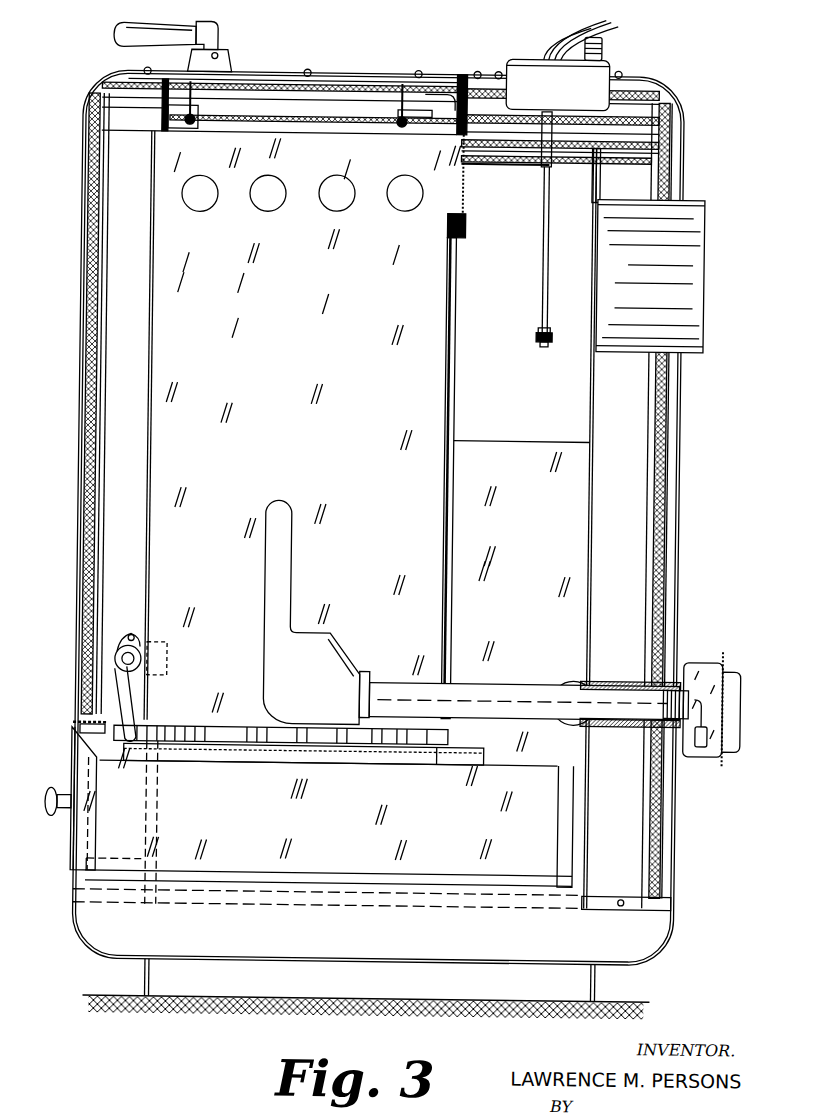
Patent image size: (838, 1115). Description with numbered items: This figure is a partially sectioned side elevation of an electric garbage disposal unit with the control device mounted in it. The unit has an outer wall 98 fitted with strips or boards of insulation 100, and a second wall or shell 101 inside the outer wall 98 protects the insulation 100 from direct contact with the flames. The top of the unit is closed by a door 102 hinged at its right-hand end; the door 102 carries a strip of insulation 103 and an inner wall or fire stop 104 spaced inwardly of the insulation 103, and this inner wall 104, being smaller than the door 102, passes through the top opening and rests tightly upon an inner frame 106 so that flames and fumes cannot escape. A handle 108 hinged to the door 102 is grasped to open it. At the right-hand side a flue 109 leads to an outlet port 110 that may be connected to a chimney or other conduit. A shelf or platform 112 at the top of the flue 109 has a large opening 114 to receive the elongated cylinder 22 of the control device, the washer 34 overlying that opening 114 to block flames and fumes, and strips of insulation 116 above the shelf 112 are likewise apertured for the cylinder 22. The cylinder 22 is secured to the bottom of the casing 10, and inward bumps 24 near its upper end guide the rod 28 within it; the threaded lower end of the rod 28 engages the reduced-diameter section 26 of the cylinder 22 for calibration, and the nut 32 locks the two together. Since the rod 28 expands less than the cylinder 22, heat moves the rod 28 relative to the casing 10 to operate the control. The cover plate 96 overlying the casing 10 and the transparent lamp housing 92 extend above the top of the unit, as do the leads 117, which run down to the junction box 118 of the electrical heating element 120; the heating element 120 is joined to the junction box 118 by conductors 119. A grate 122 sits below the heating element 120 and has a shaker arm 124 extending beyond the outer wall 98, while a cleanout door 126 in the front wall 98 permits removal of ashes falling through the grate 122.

The casing 10 is at (582, 91).
The elongated cylinder 22 is at (539, 261).
The bumps 24 is at (648, 140).
The reduced-diameter section 26 is at (538, 331).
The rod 28 is at (538, 344).
The nut 32 is at (535, 336).
The circular washer 34 is at (554, 160).
The lamp housing 92 is at (597, 44).
The cover plate 96 is at (604, 61).
The outer wall 98 is at (77, 507).
The strips of insulation 100 is at (90, 357).
The second wall 101 is at (145, 261).
The door 102 is at (334, 73).
The strip of insulation 103 is at (242, 86).
The inner wall 104 is at (223, 114).
The inner frame 106 is at (152, 128).
The handle 108 is at (107, 36).
The flue 109 is at (541, 413).
The outlet port 110 is at (685, 298).
The shelf 112 is at (496, 162).
The opening 114 is at (536, 161).
The strips of insulation 116 is at (648, 114).
The leads 117 is at (544, 37).
The junction box 118 is at (719, 678).
The conductors 119 is at (710, 713).
The electrical heating element 120 is at (269, 577).
The grate 122 is at (283, 750).
The shaker arm 124 is at (131, 700).
The cleanout door 126 is at (86, 781).